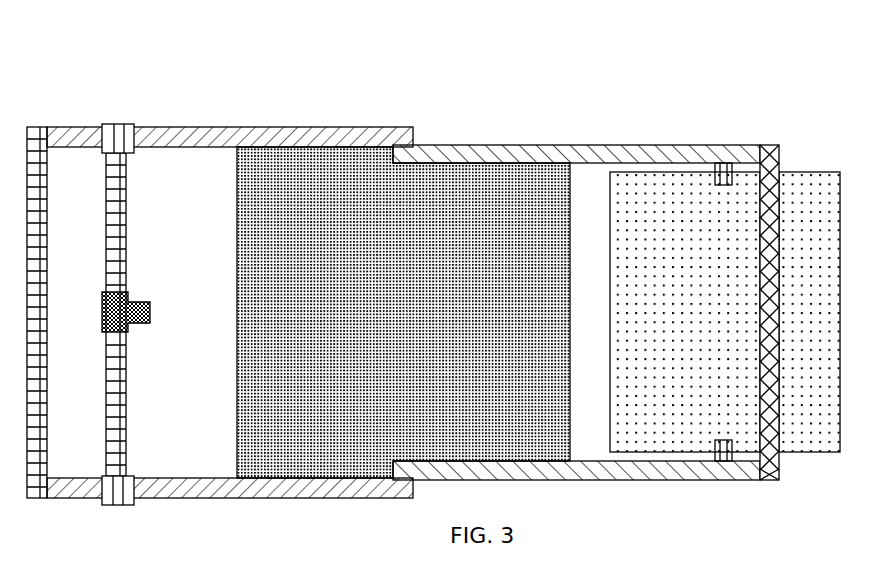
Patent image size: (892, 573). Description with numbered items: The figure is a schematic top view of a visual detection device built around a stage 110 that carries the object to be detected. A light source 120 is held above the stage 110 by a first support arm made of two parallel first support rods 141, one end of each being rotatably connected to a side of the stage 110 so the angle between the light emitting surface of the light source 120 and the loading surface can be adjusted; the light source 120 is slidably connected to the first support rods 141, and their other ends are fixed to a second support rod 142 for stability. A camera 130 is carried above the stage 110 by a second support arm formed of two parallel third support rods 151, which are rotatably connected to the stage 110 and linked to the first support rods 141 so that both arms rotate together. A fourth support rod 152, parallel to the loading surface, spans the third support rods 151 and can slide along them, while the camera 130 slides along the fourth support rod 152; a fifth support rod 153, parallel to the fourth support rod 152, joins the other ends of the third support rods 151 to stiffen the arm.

The stage 110 is at (465, 198).
The light source 120 is at (662, 197).
The camera 130 is at (138, 303).
The first support rods 141 is at (582, 150).
The second support rod 142 is at (766, 192).
The third support rods 151 is at (290, 145).
The fourth support rod 152 is at (115, 197).
The fifth support rod 153 is at (34, 200).